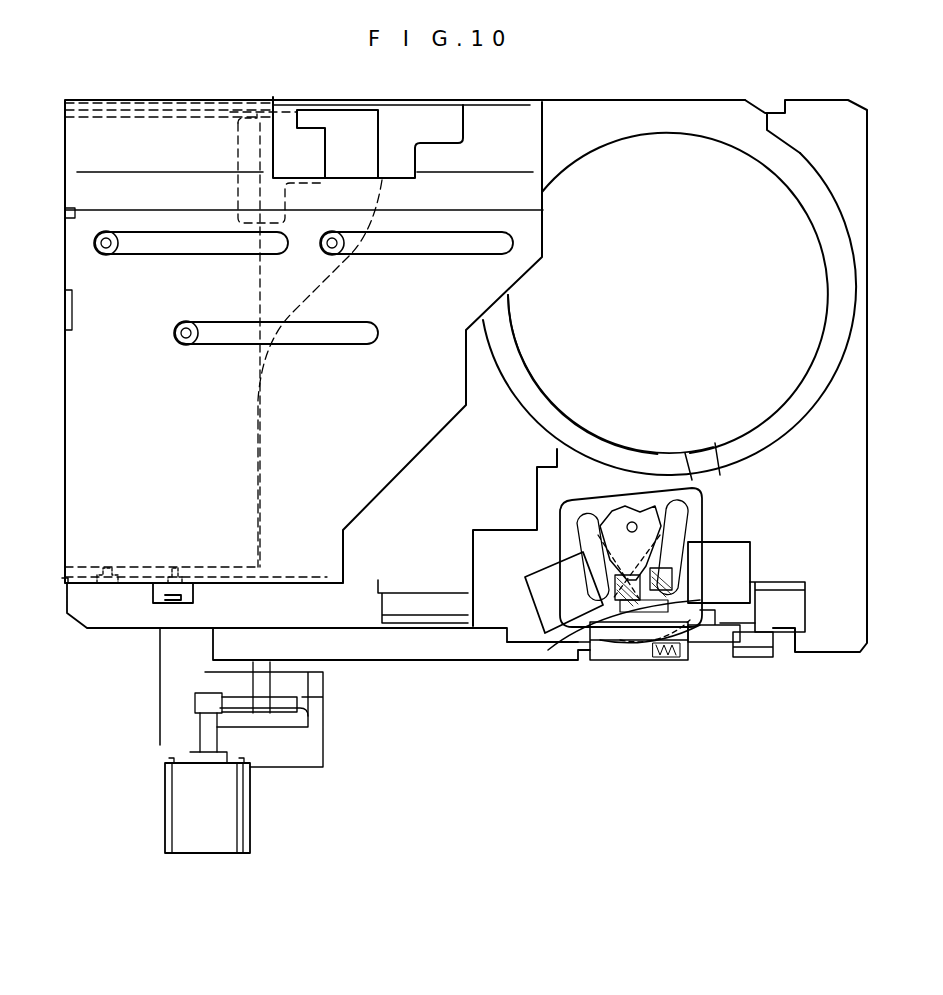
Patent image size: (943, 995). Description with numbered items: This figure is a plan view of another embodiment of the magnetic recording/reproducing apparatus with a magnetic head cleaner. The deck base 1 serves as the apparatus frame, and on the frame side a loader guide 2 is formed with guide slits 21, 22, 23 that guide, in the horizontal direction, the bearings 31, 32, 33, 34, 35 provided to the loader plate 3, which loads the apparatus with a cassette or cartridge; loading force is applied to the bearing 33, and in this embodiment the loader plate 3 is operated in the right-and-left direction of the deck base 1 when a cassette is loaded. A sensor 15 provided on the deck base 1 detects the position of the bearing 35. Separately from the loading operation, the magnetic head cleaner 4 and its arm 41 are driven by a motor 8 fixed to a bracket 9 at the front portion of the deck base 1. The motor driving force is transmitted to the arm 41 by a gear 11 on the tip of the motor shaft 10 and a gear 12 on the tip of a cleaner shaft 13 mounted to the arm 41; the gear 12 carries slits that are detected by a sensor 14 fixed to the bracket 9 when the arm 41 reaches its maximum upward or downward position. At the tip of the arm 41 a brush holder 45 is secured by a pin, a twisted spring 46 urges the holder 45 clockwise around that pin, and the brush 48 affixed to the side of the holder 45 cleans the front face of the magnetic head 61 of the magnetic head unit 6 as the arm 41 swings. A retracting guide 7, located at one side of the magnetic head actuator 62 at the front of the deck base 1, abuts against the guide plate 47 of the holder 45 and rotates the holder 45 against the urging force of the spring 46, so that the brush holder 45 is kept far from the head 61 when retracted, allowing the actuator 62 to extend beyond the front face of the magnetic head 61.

The deck base 1 is at (826, 100).
The loader guide 2 is at (543, 140).
The loader plate 3 is at (390, 128).
The magnetic head cleaner 4 is at (491, 694).
The magnetic head unit 6 is at (721, 520).
The retracting guide 7 is at (765, 660).
The motor 8 is at (180, 809).
The bracket 9 is at (160, 742).
The motor shaft 10 is at (200, 727).
The gear 11 is at (195, 703).
The gear 12 is at (300, 717).
The cleaner shaft 13 is at (262, 685).
The sensor 14 is at (272, 735).
The sensor 15 is at (153, 597).
The guide slit 21 is at (222, 256).
The guide slit 22 is at (444, 256).
The guide slit 23 is at (332, 348).
The bearing 31 is at (108, 257).
The bearing 32 is at (321, 256).
The bearing 33 is at (188, 346).
The bearing 34 is at (107, 566).
The bearing 35 is at (170, 566).
The arm 41 is at (432, 650).
The brush holder 45 is at (602, 658).
The twisted spring 46 is at (666, 660).
The guide plate 47 is at (727, 645).
The brush 48 is at (636, 640).
The magnetic head 61 is at (587, 567).
The magnetic head actuator 62 is at (578, 630).